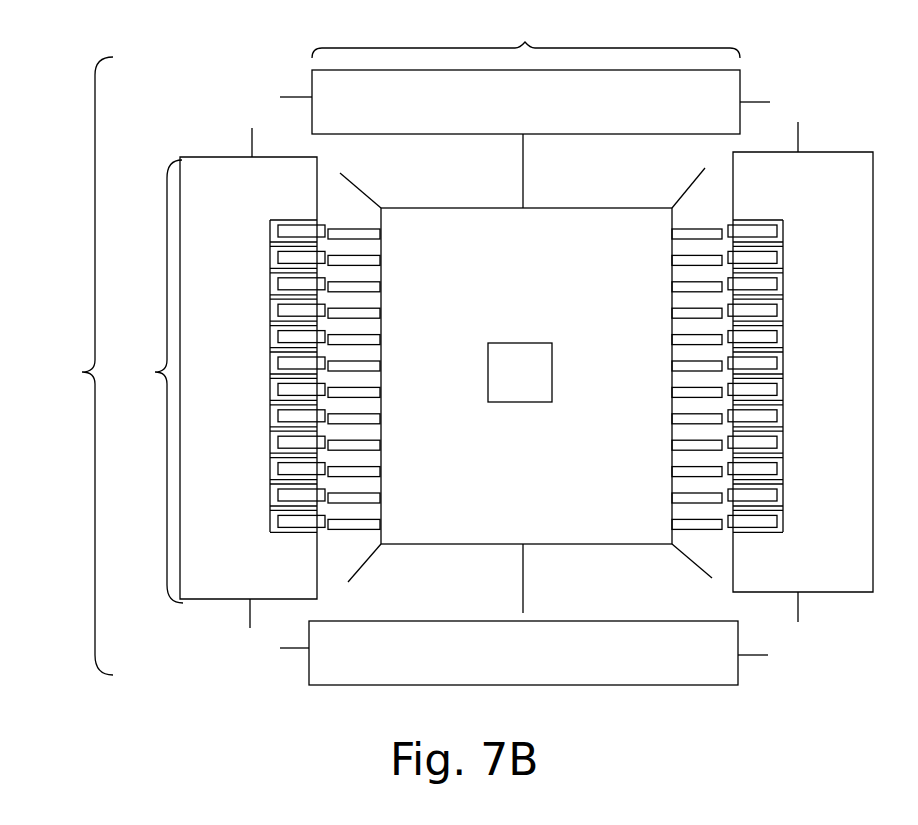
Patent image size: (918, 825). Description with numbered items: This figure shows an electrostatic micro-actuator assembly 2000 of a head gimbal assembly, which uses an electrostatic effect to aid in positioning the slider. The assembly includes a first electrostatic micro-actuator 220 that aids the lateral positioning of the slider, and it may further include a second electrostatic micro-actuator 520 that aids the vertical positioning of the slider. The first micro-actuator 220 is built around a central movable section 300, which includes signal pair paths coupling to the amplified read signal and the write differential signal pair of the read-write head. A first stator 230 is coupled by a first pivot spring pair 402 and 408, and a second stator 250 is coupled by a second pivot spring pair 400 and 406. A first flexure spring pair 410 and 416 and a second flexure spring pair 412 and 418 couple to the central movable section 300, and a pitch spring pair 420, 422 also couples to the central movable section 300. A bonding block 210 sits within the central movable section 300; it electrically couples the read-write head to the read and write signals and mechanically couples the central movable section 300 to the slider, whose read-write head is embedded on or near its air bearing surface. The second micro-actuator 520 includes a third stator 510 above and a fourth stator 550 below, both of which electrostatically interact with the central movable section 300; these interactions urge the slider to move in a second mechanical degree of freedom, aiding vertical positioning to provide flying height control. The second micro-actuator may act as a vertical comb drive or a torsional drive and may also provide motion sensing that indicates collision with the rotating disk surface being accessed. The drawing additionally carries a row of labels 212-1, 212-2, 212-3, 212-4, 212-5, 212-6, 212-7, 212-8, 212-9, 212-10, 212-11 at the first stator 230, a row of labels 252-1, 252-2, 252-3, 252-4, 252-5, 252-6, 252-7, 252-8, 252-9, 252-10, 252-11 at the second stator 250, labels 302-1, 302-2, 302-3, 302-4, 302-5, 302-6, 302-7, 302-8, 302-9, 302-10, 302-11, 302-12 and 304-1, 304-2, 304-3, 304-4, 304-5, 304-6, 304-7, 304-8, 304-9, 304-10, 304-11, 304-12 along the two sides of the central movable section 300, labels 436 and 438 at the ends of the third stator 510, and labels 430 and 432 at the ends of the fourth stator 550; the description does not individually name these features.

The electrostatic micro-actuator assembly 2000 is at (70, 366).
The first electrostatic micro-actuator 220 is at (144, 381).
The first stator 230 is at (232, 184).
The second stator 250 is at (863, 176).
The first connector contact 212-1 is at (270, 244).
The first connector contact 212-2 is at (270, 270).
The first connector contact 212-3 is at (270, 297).
The first connector contact 212-4 is at (270, 323).
The first connector contact 212-5 is at (270, 350).
The first connector contact 212-6 is at (270, 376).
The first connector contact 212-7 is at (270, 402).
The first connector contact 212-8 is at (270, 429).
The first connector contact 212-9 is at (270, 455).
The first connector contact 212-10 is at (270, 481).
The first connector contact 212-11 is at (270, 507).
The second connector contact 252-1 is at (783, 241).
The second connector contact 252-2 is at (783, 267).
The second connector contact 252-3 is at (783, 294).
The second connector contact 252-4 is at (783, 320).
The second connector contact 252-5 is at (783, 347).
The second connector contact 252-6 is at (783, 373).
The second connector contact 252-7 is at (783, 399).
The second connector contact 252-8 is at (783, 426).
The second connector contact 252-9 is at (783, 452).
The second connector contact 252-10 is at (783, 479).
The second connector contact 252-11 is at (783, 505).
The central movable section 300 is at (542, 233).
The bonding block 210 is at (520, 372).
The package lead 302-1 is at (382, 235).
The package lead 302-2 is at (382, 261).
The package lead 302-3 is at (382, 288).
The package lead 302-4 is at (382, 314).
The package lead 302-5 is at (382, 341).
The package lead 302-6 is at (382, 367).
The package lead 302-7 is at (382, 393).
The package lead 302-8 is at (382, 420).
The package lead 302-9 is at (382, 446).
The package lead 302-10 is at (382, 473).
The package lead 302-11 is at (382, 499).
The package lead 302-12 is at (382, 525).
The package lead 304-1 is at (670, 235).
The package lead 304-2 is at (670, 261).
The package lead 304-3 is at (670, 288).
The package lead 304-4 is at (670, 314).
The package lead 304-5 is at (670, 341).
The package lead 304-6 is at (670, 367).
The package lead 304-7 is at (670, 393).
The package lead 304-8 is at (670, 420).
The package lead 304-9 is at (670, 446).
The package lead 304-10 is at (670, 473).
The package lead 304-11 is at (670, 499).
The package lead 304-12 is at (670, 525).
The third stator 510 is at (526, 102).
The fourth stator 550 is at (523, 653).
The second electrostatic micro-actuator 520 is at (526, 34).
The pitch spring 422 is at (523, 180).
The pitch spring 420 is at (523, 600).
The upper component left terminal 438 is at (288, 97).
The upper component right terminal 436 is at (753, 102).
The first pivot spring 408 is at (252, 128).
The second pivot spring 406 is at (798, 122).
The first flexure spring 416 is at (342, 174).
The second flexure spring 418 is at (688, 186).
The first flexure spring 410 is at (356, 584).
The second flexure spring 412 is at (693, 563).
The first pivot spring 402 is at (250, 628).
The second pivot spring 400 is at (798, 602).
The lower component left terminal 432 is at (295, 648).
The lower component right terminal 430 is at (750, 655).